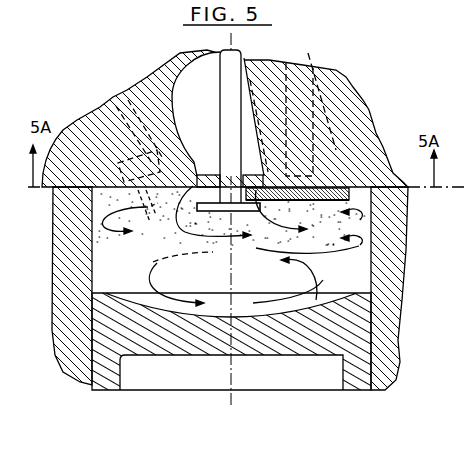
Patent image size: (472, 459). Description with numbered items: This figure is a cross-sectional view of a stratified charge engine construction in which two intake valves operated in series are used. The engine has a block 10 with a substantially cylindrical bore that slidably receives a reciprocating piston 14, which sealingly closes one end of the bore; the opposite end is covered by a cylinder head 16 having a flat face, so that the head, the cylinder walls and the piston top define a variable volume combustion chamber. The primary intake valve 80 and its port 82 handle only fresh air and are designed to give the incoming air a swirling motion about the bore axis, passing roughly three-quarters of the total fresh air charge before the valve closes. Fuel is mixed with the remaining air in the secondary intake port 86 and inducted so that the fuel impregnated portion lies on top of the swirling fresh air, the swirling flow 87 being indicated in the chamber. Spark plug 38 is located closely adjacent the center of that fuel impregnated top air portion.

The block 10 is at (396, 273).
The piston 14 is at (190, 333).
The cylinder head 16 is at (369, 147).
The spark plug 38 is at (147, 237).
The primary intake valve 80 is at (318, 201).
The port 82 is at (364, 103).
The secondary intake port 86 is at (216, 160).
The swirl air flow 87 is at (213, 228).